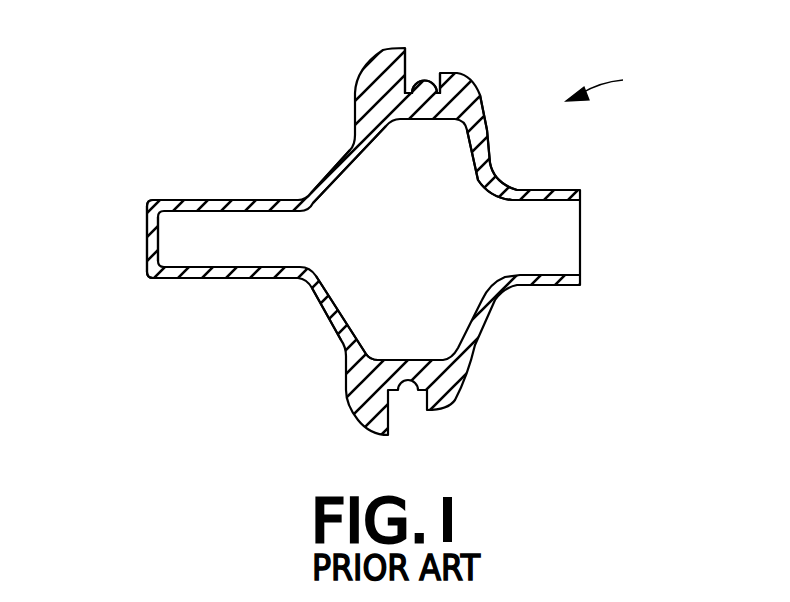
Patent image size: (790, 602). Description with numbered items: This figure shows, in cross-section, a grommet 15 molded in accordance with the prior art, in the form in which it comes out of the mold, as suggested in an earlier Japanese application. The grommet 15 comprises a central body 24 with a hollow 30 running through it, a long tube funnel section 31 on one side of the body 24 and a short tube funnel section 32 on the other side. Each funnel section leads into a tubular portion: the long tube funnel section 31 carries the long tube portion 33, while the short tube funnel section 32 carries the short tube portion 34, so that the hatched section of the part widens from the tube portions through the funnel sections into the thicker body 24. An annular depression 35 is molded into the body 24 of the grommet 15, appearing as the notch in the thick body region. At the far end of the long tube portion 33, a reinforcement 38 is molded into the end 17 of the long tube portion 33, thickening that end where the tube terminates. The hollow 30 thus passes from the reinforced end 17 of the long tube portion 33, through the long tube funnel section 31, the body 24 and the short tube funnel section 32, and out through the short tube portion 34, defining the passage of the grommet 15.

The grommet 15 is at (617, 77).
The end 17 is at (173, 274).
The body 24 is at (483, 93).
The hollow 30 is at (367, 298).
The long tube funnel section 31 is at (343, 163).
The short tube funnel section 32 is at (493, 150).
The long tube portion 33 is at (228, 200).
The short tube portion 34 is at (557, 287).
The annular depression 35 is at (410, 82).
The reinforcement 38 is at (145, 272).